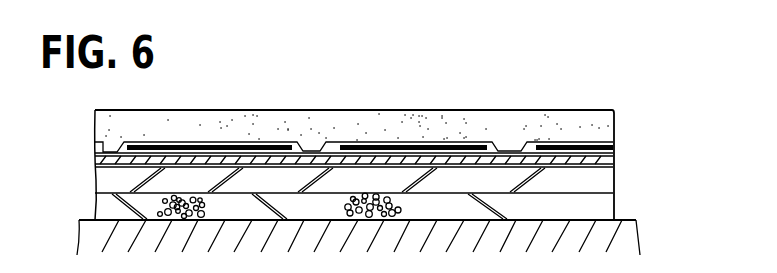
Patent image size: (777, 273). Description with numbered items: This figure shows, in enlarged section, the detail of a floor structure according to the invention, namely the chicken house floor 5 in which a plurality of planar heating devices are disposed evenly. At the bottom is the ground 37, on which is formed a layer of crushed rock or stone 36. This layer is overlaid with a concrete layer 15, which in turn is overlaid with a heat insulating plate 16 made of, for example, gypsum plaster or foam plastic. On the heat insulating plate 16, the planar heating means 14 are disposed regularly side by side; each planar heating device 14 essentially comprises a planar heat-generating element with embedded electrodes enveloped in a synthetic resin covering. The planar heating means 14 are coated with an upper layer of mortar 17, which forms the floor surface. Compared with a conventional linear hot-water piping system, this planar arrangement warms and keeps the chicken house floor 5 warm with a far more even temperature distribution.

The chicken house floor 5 is at (311, 96).
The planar heating device 14 is at (253, 148).
The concrete layer 15 is at (452, 178).
The heat insulating plate 16 is at (195, 163).
The upper layer of mortar 17 is at (372, 122).
The layer of crushed rock or stone 36 is at (583, 202).
The ground 37 is at (612, 233).